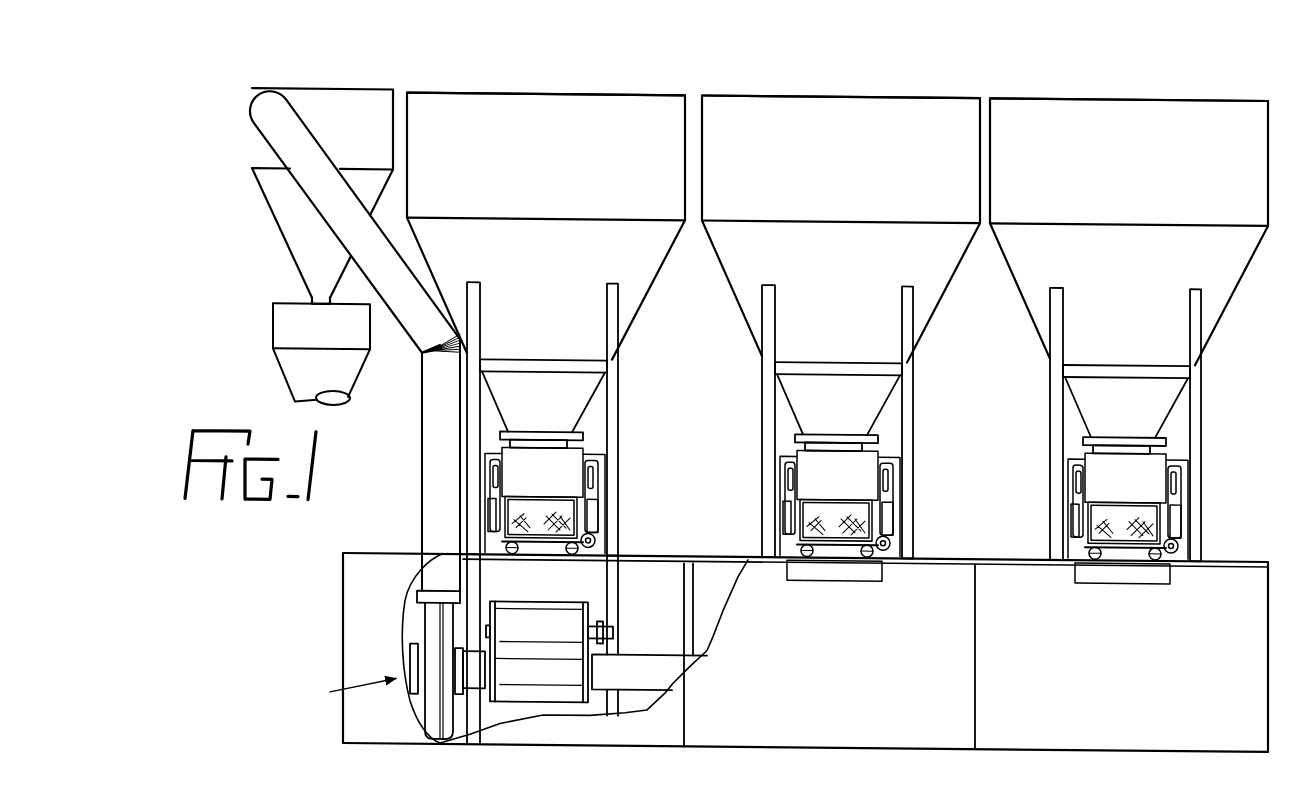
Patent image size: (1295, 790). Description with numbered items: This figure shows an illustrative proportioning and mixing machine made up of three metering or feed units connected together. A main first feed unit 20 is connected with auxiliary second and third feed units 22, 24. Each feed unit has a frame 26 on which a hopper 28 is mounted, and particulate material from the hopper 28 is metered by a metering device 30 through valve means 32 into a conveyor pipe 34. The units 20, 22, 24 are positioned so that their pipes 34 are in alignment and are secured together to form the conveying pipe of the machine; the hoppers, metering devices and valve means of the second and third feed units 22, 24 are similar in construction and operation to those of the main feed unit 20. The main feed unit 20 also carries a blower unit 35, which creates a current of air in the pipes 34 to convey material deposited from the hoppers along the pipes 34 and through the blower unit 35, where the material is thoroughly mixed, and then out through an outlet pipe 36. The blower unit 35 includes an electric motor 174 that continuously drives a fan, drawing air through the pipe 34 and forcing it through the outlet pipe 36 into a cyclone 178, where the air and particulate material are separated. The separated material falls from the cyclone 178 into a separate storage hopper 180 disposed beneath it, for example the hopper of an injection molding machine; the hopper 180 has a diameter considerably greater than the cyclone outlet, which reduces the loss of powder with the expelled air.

The main first feed unit 20 is at (591, 89).
The second feed unit 22 is at (882, 91).
The third feed unit 24 is at (1185, 93).
The frame 26 is at (1053, 318).
The hopper 28 is at (1142, 135).
The metering device 30 is at (750, 505).
The valve means 32 is at (551, 622).
The conveyor pipe 34 is at (655, 667).
The blower unit 35 is at (348, 690).
The outlet pipe 36 is at (440, 430).
The electric motor 174 is at (415, 640).
The cyclone 178 is at (302, 230).
The storage hopper 180 is at (320, 314).